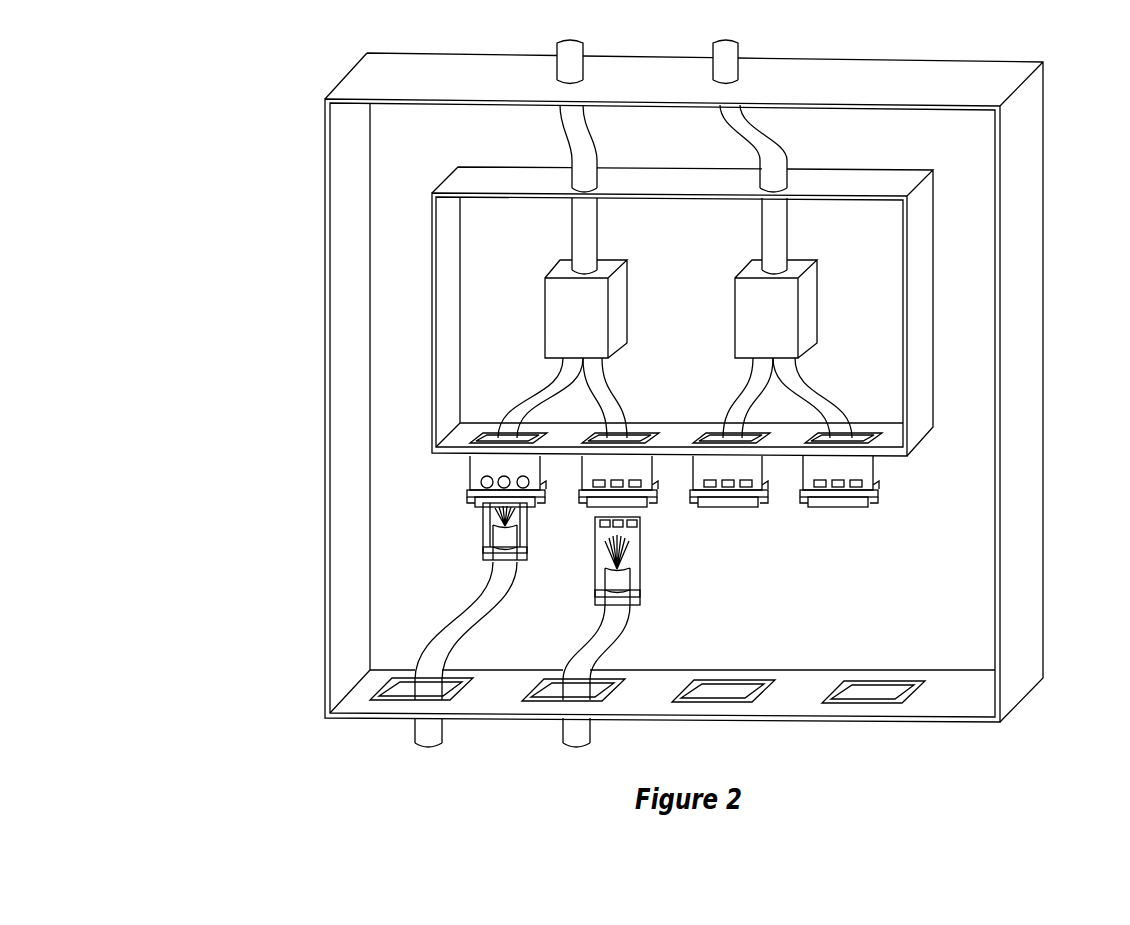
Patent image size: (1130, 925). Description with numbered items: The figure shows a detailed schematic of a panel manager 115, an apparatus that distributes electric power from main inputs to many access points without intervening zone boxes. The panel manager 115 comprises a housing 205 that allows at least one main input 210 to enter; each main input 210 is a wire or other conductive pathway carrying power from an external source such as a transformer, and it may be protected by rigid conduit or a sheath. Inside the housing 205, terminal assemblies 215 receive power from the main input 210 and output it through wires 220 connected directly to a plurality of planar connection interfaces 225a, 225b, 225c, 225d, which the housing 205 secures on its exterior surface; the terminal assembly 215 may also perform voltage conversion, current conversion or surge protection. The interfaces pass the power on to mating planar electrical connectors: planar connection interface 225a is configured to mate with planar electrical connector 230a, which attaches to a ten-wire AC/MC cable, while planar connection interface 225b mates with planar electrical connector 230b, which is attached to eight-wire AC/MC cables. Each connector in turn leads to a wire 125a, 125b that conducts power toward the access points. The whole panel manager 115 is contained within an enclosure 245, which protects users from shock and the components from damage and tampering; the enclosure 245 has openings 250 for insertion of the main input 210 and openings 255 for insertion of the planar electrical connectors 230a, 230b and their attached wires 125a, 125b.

The panel manager 115 is at (296, 172).
The wire 125a is at (463, 635).
The wire 125b is at (613, 635).
The housing 205 is at (923, 318).
The main input 210 is at (575, 53).
The terminal assembly 215 is at (592, 328).
The wires 220 is at (517, 410).
The planar connection interface 225a is at (478, 470).
The planar connection interface 225b is at (590, 473).
The planar connection interface 225c is at (730, 507).
The planar connection interface 225d is at (843, 507).
The planar electrical connector 230a is at (485, 537).
The planar electrical connector 230b is at (637, 565).
The enclosure 245 is at (1035, 570).
The openings 250 is at (555, 82).
The openings 255 is at (402, 693).